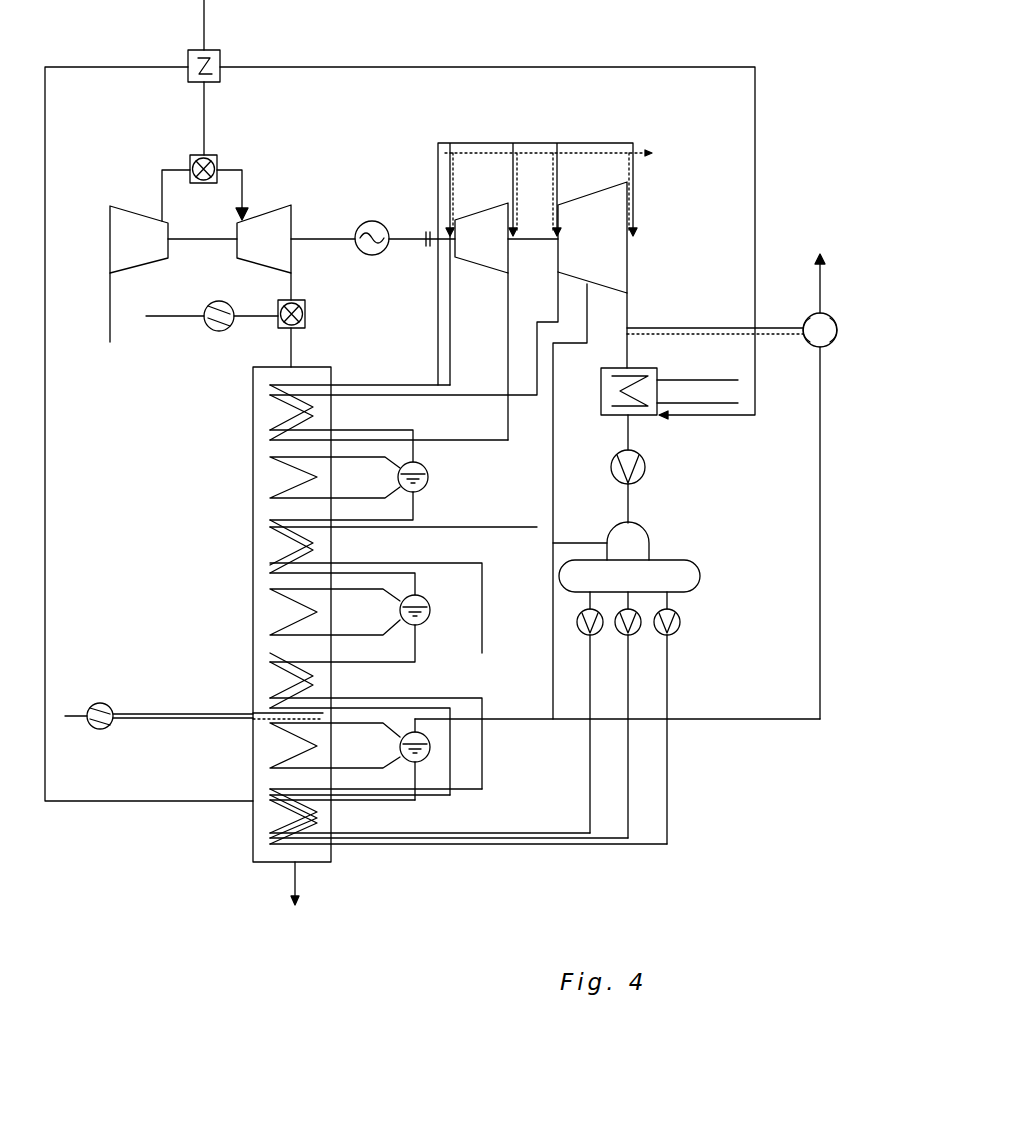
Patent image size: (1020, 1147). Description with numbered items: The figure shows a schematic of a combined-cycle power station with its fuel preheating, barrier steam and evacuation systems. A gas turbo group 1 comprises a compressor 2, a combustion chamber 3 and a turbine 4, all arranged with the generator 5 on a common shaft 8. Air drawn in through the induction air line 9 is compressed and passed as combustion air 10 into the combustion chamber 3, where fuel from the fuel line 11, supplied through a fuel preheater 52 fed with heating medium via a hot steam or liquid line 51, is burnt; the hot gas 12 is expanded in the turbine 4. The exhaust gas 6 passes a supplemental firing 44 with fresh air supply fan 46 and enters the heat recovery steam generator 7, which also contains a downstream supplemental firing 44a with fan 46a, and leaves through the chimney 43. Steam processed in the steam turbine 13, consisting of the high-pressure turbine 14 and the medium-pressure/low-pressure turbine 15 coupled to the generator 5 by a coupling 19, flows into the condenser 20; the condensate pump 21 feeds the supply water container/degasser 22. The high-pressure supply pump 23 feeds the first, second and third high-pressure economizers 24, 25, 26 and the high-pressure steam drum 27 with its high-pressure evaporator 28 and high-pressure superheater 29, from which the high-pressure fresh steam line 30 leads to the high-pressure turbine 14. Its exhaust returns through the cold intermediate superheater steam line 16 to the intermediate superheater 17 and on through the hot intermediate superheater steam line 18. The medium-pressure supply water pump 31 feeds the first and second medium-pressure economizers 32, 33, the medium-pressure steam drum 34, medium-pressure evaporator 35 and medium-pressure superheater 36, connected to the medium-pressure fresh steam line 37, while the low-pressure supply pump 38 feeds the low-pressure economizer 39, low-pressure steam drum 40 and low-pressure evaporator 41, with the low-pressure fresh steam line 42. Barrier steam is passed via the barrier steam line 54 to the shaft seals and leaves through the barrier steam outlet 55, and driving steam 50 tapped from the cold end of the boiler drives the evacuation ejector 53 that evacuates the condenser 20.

The gas turbo group 1 is at (216, 126).
The compressor 2 is at (148, 256).
The combustion chamber 3 is at (215, 158).
The turbine 4 is at (283, 252).
The generator 5 is at (372, 220).
The exhaust gas 6 is at (295, 290).
The heat recovery steam generator 7 is at (246, 792).
The common shaft 8 is at (321, 233).
The induction air line 9 is at (108, 287).
The combustion air 10 is at (160, 192).
The fuel line 11 is at (200, 135).
The hot gas 12 is at (245, 177).
The steam turbine 13 is at (533, 218).
The high-pressure turbine 14 is at (495, 254).
The medium-pressure/low-pressure turbine 15 is at (608, 254).
The cold intermediate superheater steam line 16 is at (505, 333).
The intermediate superheater 17 is at (268, 439).
The hot intermediate superheater steam line 18 is at (493, 398).
The coupling or clutch 19 is at (423, 230).
The condenser 20 is at (652, 370).
The condensate pump 21 is at (645, 467).
The supply water container/degasser 22 is at (665, 572).
The high-pressure supply pump 23 is at (598, 632).
The first high-pressure economizer 24 is at (273, 835).
The second high-pressure economizer 25 is at (270, 698).
The third high-pressure economizer 26 is at (267, 557).
The high-pressure steam drum 27 is at (428, 477).
The high-pressure evaporator 28 is at (283, 466).
The high-pressure superheater 29 is at (267, 430).
The high-pressure fresh steam line 30 is at (373, 383).
The medium-pressure supply water pump 31 is at (635, 630).
The first medium-pressure economizer 32 is at (275, 840).
The second medium-pressure economizer 33 is at (270, 709).
The medium-pressure steam drum 34 is at (430, 605).
The medium-pressure evaporator 35 is at (287, 608).
The medium-pressure superheater 36 is at (265, 565).
The medium-pressure fresh steam line 37 is at (473, 518).
The low-pressure supply pump 38 is at (675, 630).
The low-pressure economizer 39 is at (273, 847).
The low-pressure steam drum 40 is at (430, 742).
The low-pressure evaporator 41 is at (287, 750).
The low-pressure fresh steam line 42 is at (508, 715).
The chimney 43 is at (290, 897).
The supplemental firing 44 is at (305, 318).
The supplemental firing 44a is at (258, 723).
The fresh air supply fan 46 is at (207, 327).
The fresh air supply fan 46a is at (100, 705).
The driving steam line 50 is at (755, 720).
The heating medium line 51 is at (755, 247).
The fuel preheater 52 is at (186, 50).
The evacuation ejector 53 is at (838, 322).
The barrier steam line 54 is at (465, 139).
The barrier steam outlet 55 is at (575, 152).